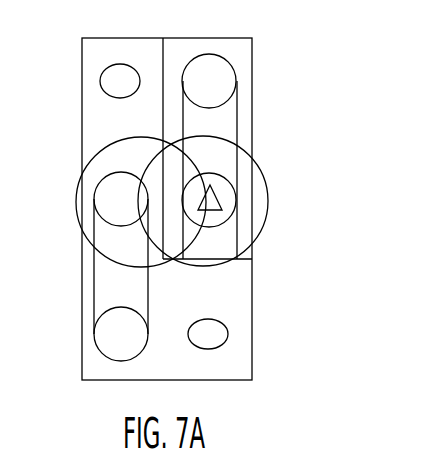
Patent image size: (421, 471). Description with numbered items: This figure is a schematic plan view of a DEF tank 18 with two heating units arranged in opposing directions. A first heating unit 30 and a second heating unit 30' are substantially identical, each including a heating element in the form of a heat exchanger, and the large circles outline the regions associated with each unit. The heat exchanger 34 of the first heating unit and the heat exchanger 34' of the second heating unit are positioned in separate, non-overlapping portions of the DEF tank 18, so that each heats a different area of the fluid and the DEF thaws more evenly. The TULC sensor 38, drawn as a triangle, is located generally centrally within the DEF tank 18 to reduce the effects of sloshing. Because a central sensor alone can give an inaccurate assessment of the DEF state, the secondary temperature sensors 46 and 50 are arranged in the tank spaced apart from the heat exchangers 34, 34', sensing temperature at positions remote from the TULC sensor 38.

The DEF tank 18 is at (253, 290).
The first heating unit 30 is at (218, 201).
The second heating unit 30' is at (122, 202).
The heat exchanger 34 is at (243, 63).
The heat exchanger 34' is at (93, 328).
The TULC sensor 38 is at (211, 186).
The first temperature sensor 46 is at (217, 335).
The second temperature sensor 50 is at (110, 78).